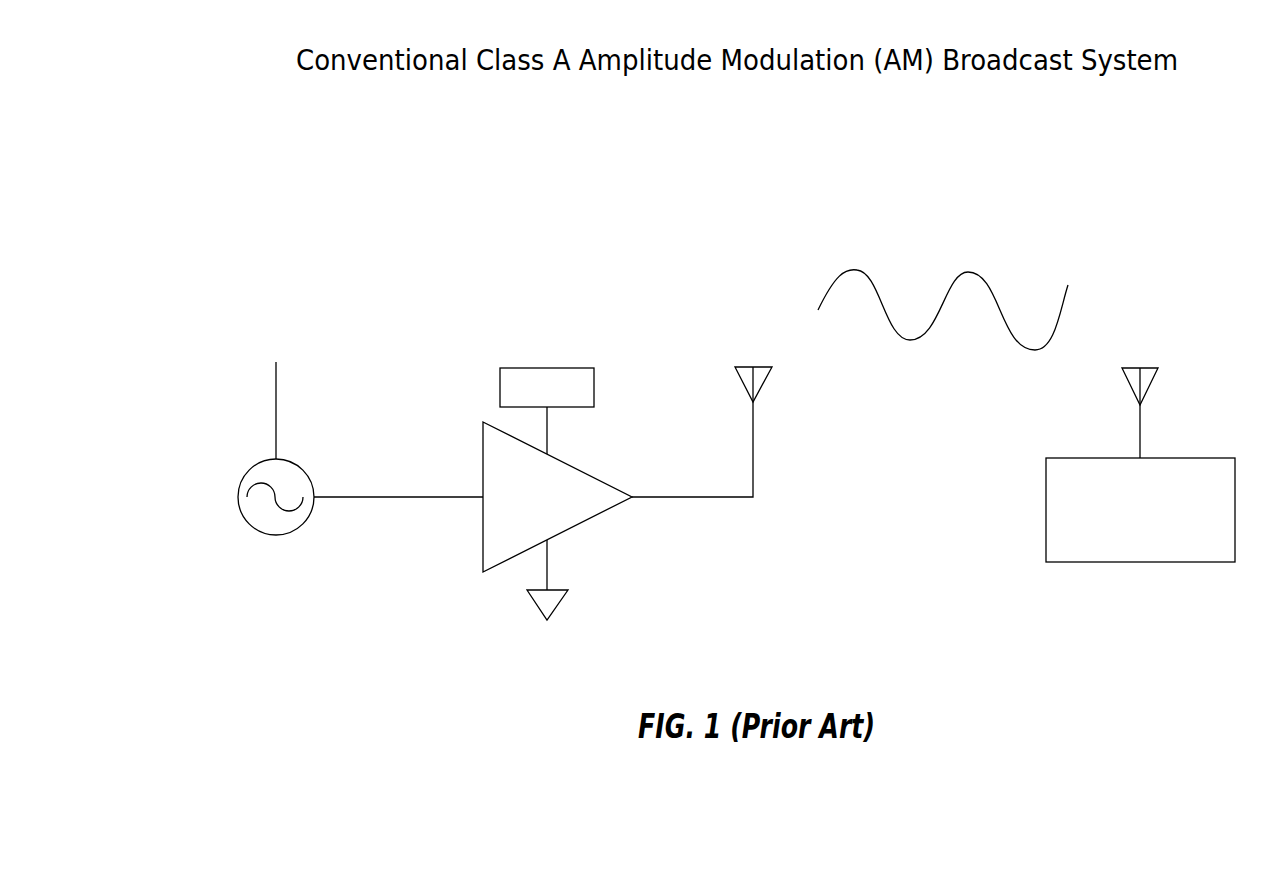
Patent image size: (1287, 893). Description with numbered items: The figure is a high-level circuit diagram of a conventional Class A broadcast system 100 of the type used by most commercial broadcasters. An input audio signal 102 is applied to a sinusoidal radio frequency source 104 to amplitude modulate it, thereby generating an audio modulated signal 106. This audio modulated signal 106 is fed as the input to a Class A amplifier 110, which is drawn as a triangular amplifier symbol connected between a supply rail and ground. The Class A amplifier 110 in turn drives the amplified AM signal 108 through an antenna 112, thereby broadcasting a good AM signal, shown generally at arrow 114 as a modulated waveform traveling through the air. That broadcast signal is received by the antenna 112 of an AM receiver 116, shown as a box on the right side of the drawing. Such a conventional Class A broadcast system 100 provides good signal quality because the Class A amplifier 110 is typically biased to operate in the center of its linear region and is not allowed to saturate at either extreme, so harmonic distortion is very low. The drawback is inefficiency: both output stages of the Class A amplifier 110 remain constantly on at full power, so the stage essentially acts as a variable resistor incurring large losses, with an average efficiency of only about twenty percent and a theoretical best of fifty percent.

The conventional Class A broadcast system 100 is at (544, 292).
The input audio signal 102 is at (267, 380).
The sinusoidal radio frequency source 104 is at (236, 497).
The audio modulated signal 106 is at (380, 497).
The amplified AM signal 108 is at (662, 497).
The Class A amplifier 110 is at (557, 510).
The antenna 112 is at (1180, 420).
The broadcast AM signal 114 is at (945, 377).
The AM receiver 116 is at (1140, 510).